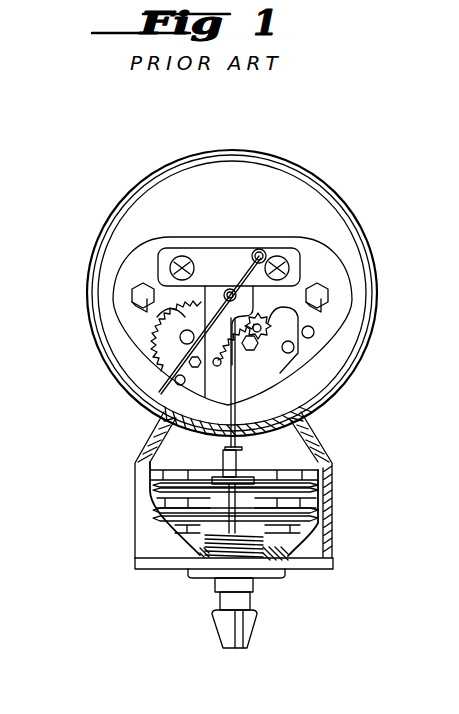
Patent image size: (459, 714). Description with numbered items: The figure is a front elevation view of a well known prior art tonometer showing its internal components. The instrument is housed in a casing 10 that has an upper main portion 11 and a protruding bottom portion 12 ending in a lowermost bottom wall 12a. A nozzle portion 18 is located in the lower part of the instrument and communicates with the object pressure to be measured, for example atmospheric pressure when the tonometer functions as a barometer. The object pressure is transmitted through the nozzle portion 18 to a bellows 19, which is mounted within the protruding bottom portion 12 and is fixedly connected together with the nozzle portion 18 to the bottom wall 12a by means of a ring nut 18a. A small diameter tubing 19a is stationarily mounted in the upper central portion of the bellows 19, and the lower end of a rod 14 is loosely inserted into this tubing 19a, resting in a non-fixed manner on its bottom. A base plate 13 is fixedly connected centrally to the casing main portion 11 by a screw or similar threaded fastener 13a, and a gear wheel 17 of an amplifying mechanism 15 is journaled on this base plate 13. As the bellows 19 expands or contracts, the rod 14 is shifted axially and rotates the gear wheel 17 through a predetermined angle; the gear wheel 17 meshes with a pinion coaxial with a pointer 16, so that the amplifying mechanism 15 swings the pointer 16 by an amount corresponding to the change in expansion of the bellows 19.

The casing 10 is at (308, 157).
The main portion of the casing 11 is at (343, 203).
The protruding bottom portion 12 is at (334, 530).
The lowermost bottom wall 12a is at (334, 567).
The base plate 13 is at (324, 284).
The screw or similar threaded fastener 13a is at (131, 294).
The rod 14 is at (320, 418).
The amplifying mechanism 15 is at (270, 366).
The pointer 16 is at (218, 280).
The gear wheel 17 is at (188, 312).
The nozzle portion 18 is at (257, 622).
The ring nut 18a is at (282, 576).
The bellows 19 is at (332, 488).
The small diameter tubing 19a is at (331, 452).